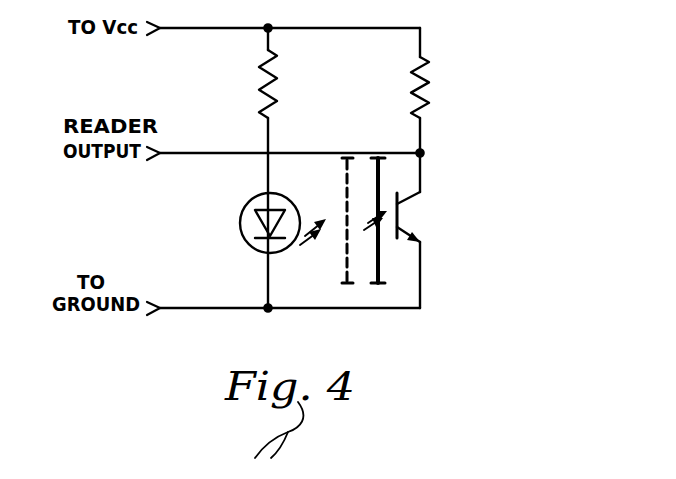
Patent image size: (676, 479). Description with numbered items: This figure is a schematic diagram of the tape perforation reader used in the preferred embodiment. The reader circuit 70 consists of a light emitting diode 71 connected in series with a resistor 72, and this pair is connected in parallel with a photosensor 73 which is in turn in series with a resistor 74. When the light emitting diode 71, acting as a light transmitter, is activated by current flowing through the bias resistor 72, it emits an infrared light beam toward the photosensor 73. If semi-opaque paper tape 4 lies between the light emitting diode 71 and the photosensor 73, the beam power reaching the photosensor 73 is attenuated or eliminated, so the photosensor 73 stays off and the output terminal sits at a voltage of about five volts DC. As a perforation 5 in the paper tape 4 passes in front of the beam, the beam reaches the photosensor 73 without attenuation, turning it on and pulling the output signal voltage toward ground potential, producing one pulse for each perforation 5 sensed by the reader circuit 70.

The reader circuit 70 is at (443, 44).
The resistor 72 is at (276, 107).
The resistor 74 is at (428, 105).
The light emitting diode 71 is at (240, 222).
The photosensor 73 is at (399, 222).
The paper tape 4 is at (342, 181).
The perforation 5 is at (383, 207).